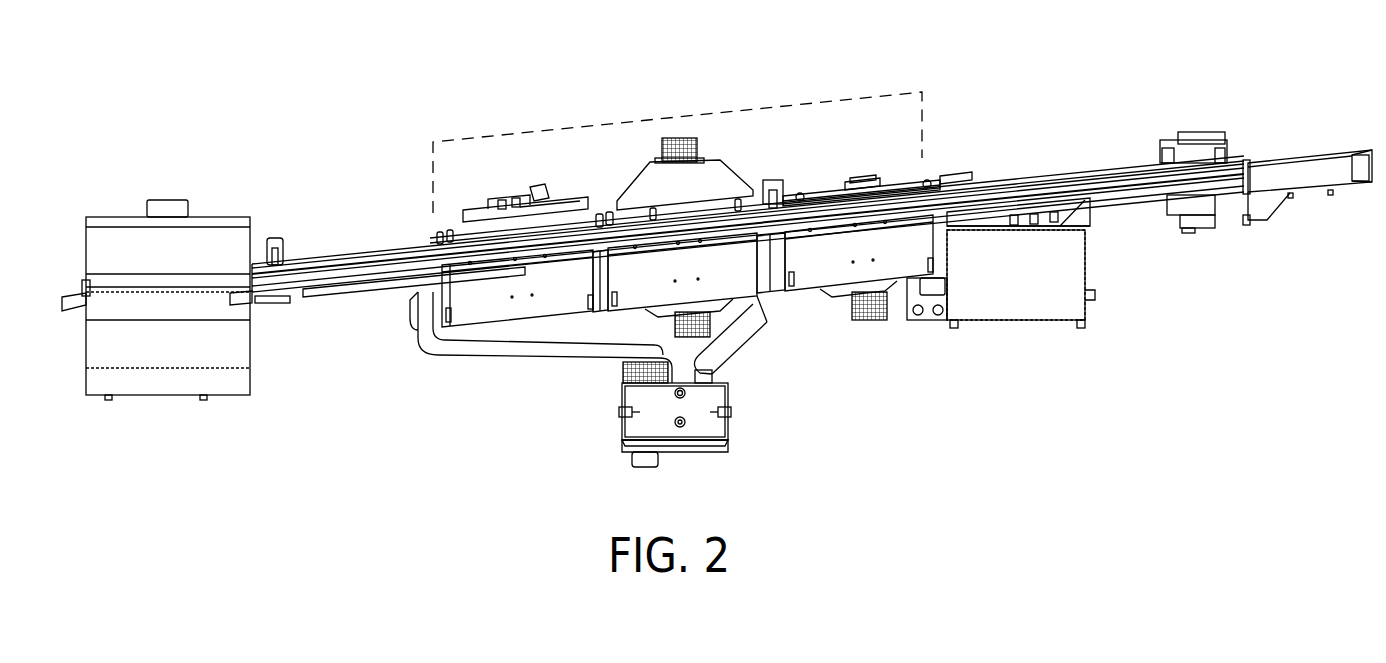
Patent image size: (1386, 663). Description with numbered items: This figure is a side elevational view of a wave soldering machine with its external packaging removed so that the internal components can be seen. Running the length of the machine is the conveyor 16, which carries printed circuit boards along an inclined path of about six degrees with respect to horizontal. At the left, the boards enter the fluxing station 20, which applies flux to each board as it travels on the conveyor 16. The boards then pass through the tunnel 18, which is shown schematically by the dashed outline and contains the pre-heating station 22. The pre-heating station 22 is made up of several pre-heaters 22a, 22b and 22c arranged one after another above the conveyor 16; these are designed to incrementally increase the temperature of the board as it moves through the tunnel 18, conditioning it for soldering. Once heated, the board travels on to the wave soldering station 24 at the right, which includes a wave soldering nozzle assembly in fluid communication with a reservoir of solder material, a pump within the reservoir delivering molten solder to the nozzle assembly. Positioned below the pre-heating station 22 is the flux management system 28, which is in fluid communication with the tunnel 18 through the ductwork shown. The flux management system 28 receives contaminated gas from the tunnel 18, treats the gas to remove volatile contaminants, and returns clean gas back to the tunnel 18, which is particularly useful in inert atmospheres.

The conveyor 16 is at (368, 258).
The tunnel 18 is at (538, 160).
The fluxing station 20 is at (120, 192).
The pre-heating station 22 is at (704, 97).
The pre-heater 22a is at (521, 196).
The pre-heater 22b is at (668, 207).
The pre-heater 22c is at (835, 185).
The wave soldering station 24 is at (1020, 155).
The flux management system 28 is at (748, 453).